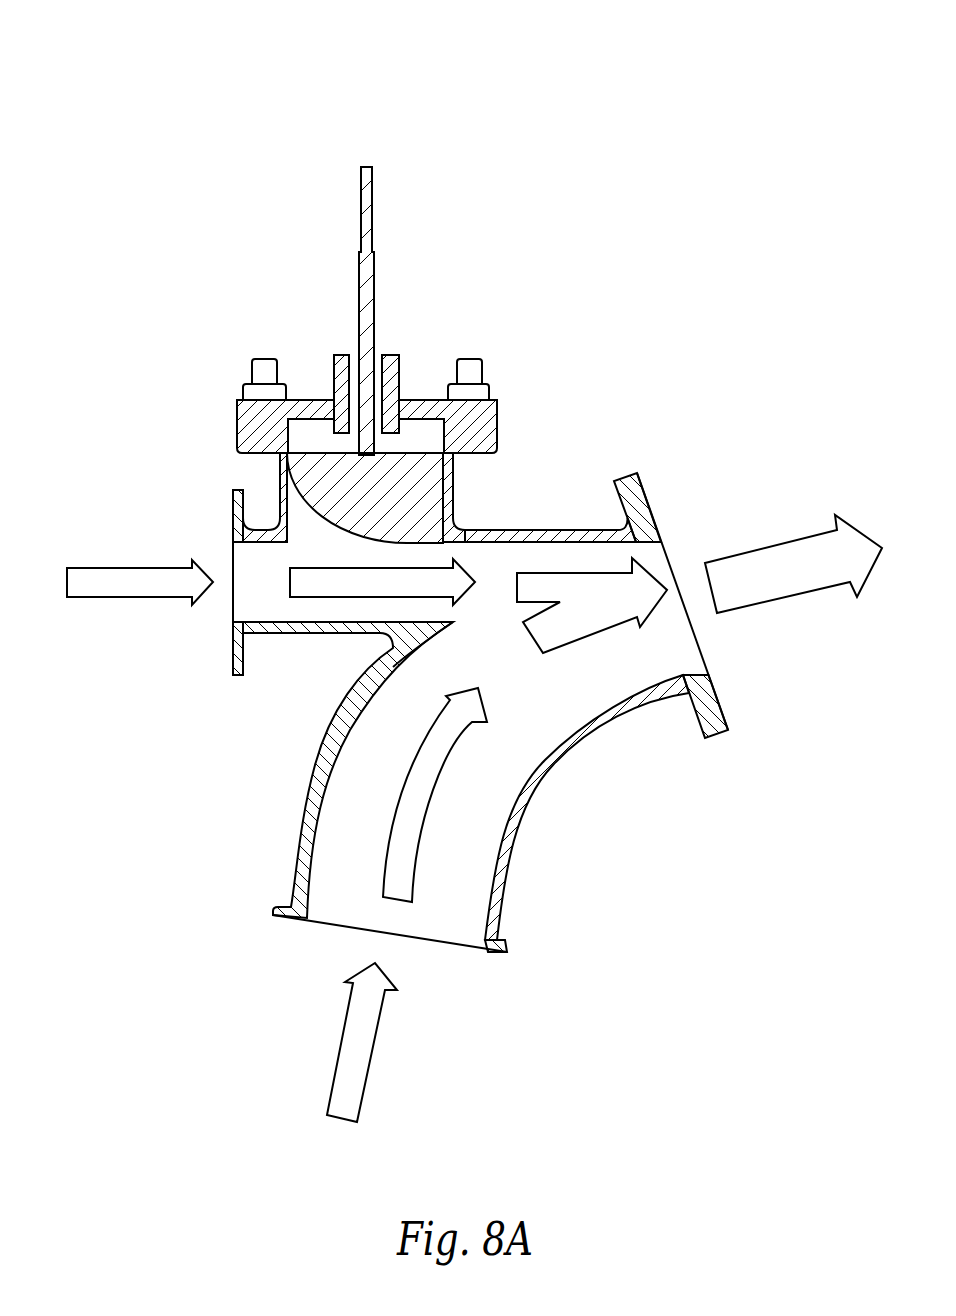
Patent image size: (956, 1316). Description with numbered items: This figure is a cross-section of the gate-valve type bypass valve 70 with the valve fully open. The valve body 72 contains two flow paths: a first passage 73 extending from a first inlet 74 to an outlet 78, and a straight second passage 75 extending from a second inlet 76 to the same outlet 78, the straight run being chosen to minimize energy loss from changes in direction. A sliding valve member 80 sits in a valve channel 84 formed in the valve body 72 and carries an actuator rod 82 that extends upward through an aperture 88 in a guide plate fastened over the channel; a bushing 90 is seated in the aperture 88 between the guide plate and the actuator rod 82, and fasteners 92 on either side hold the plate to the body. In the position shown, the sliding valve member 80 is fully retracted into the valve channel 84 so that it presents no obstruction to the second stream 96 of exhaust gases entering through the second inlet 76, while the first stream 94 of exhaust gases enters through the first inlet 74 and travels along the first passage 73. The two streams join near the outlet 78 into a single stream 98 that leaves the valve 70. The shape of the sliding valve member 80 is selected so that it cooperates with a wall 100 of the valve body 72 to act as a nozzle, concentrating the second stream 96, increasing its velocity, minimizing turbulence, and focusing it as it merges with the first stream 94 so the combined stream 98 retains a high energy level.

The bypass valve 70 is at (150, 60).
The valve body 72 is at (557, 532).
The first passage 73 is at (493, 785).
The first inlet 74 is at (458, 932).
The second passage 75 is at (340, 610).
The second inlet 76 is at (245, 607).
The outlet 78 is at (683, 657).
The sliding valve member 80 is at (320, 472).
The actuator rod 82 is at (373, 262).
The valve channel 84 is at (423, 437).
The aperture 88 is at (353, 373).
The bushing 90 is at (377, 363).
The fasteners 92 is at (226, 372).
The first stream 94 is at (397, 850).
The second stream 96 is at (91, 587).
The single stream 98 is at (770, 560).
The wall 100 is at (422, 606).